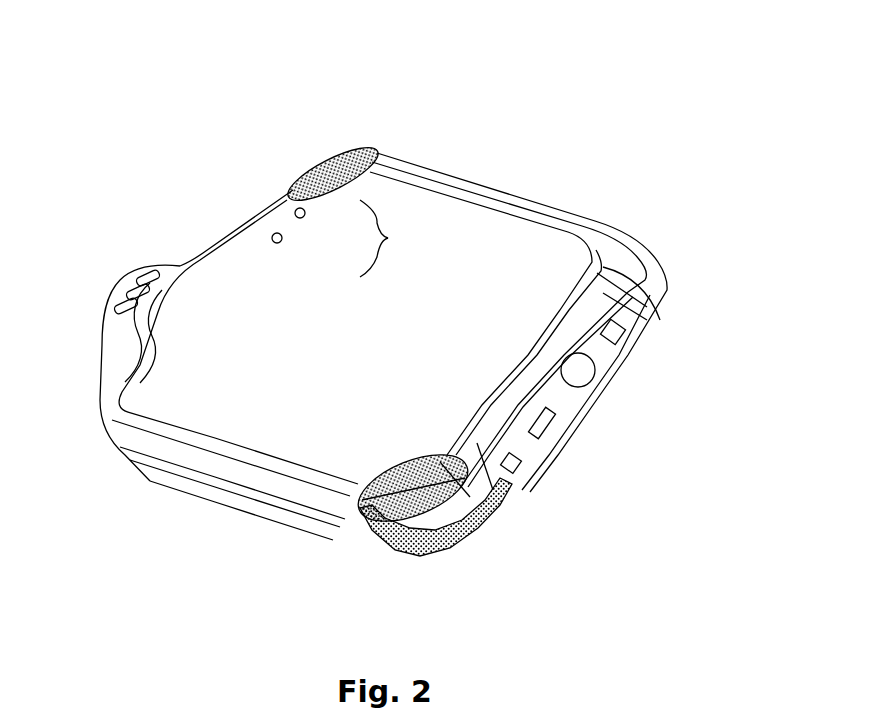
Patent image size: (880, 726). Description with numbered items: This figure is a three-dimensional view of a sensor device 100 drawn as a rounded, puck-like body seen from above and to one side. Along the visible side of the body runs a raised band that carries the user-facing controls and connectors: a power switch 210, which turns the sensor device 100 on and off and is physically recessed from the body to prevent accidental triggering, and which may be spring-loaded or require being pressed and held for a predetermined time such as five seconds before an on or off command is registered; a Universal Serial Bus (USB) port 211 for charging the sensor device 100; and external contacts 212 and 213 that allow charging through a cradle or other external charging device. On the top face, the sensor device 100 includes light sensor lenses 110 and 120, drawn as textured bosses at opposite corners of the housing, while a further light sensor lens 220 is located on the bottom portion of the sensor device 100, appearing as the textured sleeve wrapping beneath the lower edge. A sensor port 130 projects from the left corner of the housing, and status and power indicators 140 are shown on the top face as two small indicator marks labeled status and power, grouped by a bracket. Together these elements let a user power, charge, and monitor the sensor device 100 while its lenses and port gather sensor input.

The sensor device 100 is at (760, 65).
The light sensor lens 110 is at (322, 163).
The light sensor lens 120 is at (352, 518).
The sensor port 130 is at (130, 291).
The status and power indicators 140 is at (393, 237).
The power switch 210 is at (590, 383).
The Universal Serial Bus (USB) port 211 is at (557, 440).
The external contact 212 is at (533, 477).
The external contact 213 is at (632, 333).
The light sensor lens 220 is at (463, 547).